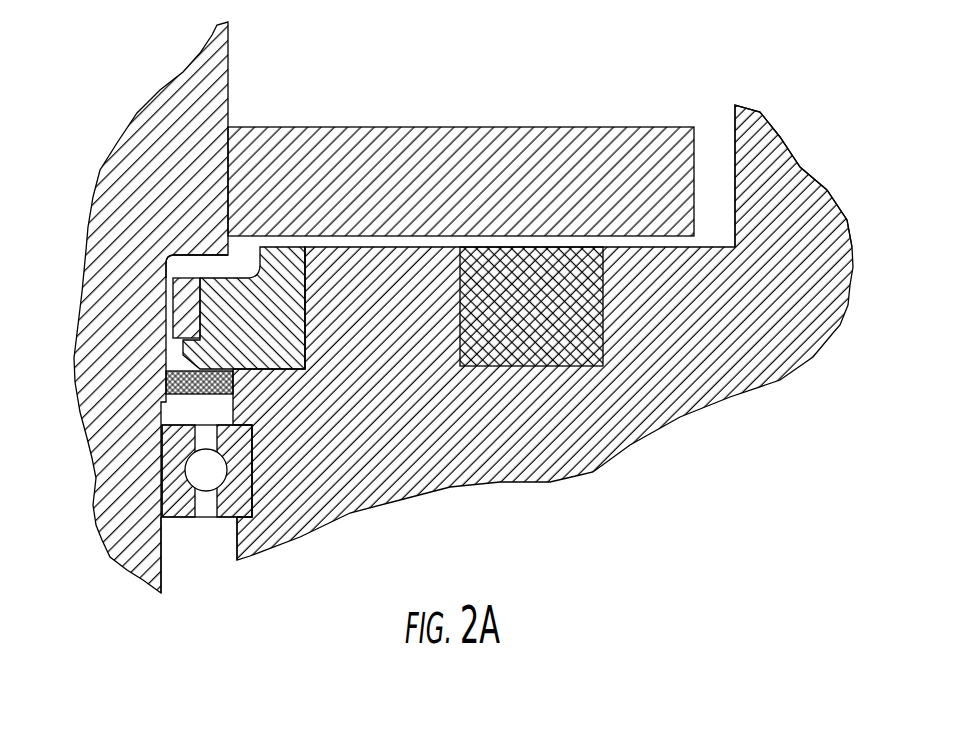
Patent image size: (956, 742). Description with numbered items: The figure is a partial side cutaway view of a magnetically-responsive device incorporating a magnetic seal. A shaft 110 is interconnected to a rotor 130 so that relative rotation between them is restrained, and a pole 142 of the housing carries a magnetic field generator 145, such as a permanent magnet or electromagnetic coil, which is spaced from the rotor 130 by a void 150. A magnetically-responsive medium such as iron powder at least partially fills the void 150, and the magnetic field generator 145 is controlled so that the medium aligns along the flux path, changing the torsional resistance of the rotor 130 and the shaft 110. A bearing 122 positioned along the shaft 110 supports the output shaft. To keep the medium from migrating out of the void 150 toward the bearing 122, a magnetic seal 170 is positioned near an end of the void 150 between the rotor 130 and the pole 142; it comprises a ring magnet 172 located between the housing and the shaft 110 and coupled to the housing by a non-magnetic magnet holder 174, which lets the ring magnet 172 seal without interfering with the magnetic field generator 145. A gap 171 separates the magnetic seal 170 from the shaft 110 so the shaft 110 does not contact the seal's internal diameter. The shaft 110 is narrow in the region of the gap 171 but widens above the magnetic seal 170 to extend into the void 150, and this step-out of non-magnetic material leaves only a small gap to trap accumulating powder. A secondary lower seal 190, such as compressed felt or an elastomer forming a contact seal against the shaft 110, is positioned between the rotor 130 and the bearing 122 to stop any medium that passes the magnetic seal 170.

The shaft 110 is at (146, 170).
The bearing 122 is at (198, 530).
The rotor 130 is at (607, 147).
The pole 142 is at (743, 370).
The magnetic field generator 145 is at (593, 335).
The void 150 is at (712, 236).
The magnetic seal 170 is at (147, 357).
The gap 171 is at (167, 278).
The ring magnet 172 is at (183, 315).
The magnet holder 174 is at (305, 347).
The secondary lower seal 190 is at (162, 393).